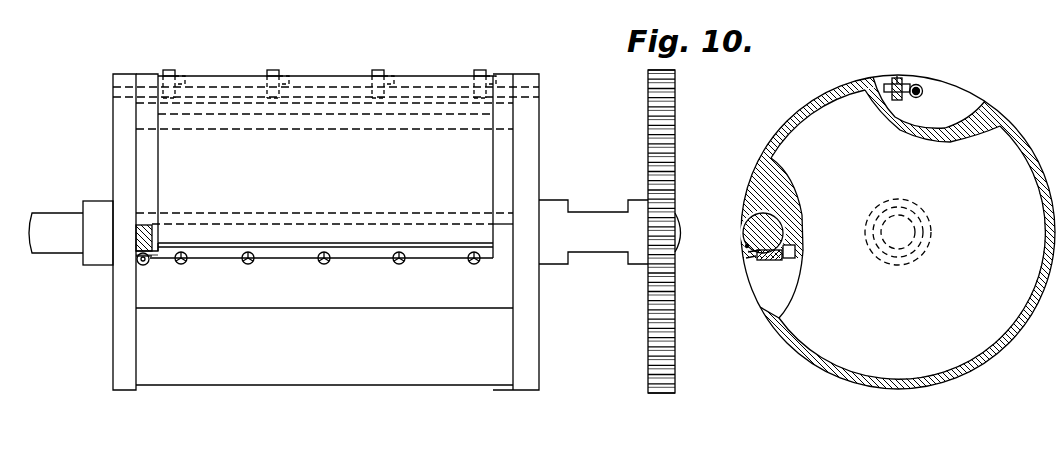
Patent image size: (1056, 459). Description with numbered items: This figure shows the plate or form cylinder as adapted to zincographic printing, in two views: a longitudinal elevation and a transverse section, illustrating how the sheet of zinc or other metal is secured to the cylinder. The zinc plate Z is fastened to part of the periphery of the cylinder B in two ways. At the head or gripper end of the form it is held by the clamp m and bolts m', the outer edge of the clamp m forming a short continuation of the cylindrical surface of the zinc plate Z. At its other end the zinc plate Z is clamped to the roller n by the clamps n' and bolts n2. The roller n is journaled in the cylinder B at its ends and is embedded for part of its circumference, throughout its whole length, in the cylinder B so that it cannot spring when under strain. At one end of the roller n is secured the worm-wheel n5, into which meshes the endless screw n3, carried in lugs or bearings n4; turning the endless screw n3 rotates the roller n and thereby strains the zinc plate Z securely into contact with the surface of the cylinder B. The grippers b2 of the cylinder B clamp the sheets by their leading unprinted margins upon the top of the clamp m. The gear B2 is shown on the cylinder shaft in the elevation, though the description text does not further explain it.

The zinc plate Z is at (770, 144).
The cylinder B is at (480, 232).
The gear wheel B2 is at (652, 318).
The grippers b2 is at (171, 74).
The roller n is at (465, 249).
The clamps n' is at (442, 257).
The bolts n2 is at (186, 263).
The endless screw n3 is at (137, 259).
The lugs or bearings n4 is at (147, 264).
The worm-wheel n5 is at (136, 230).
The clamp m is at (901, 94).
The bolts m' is at (897, 75).